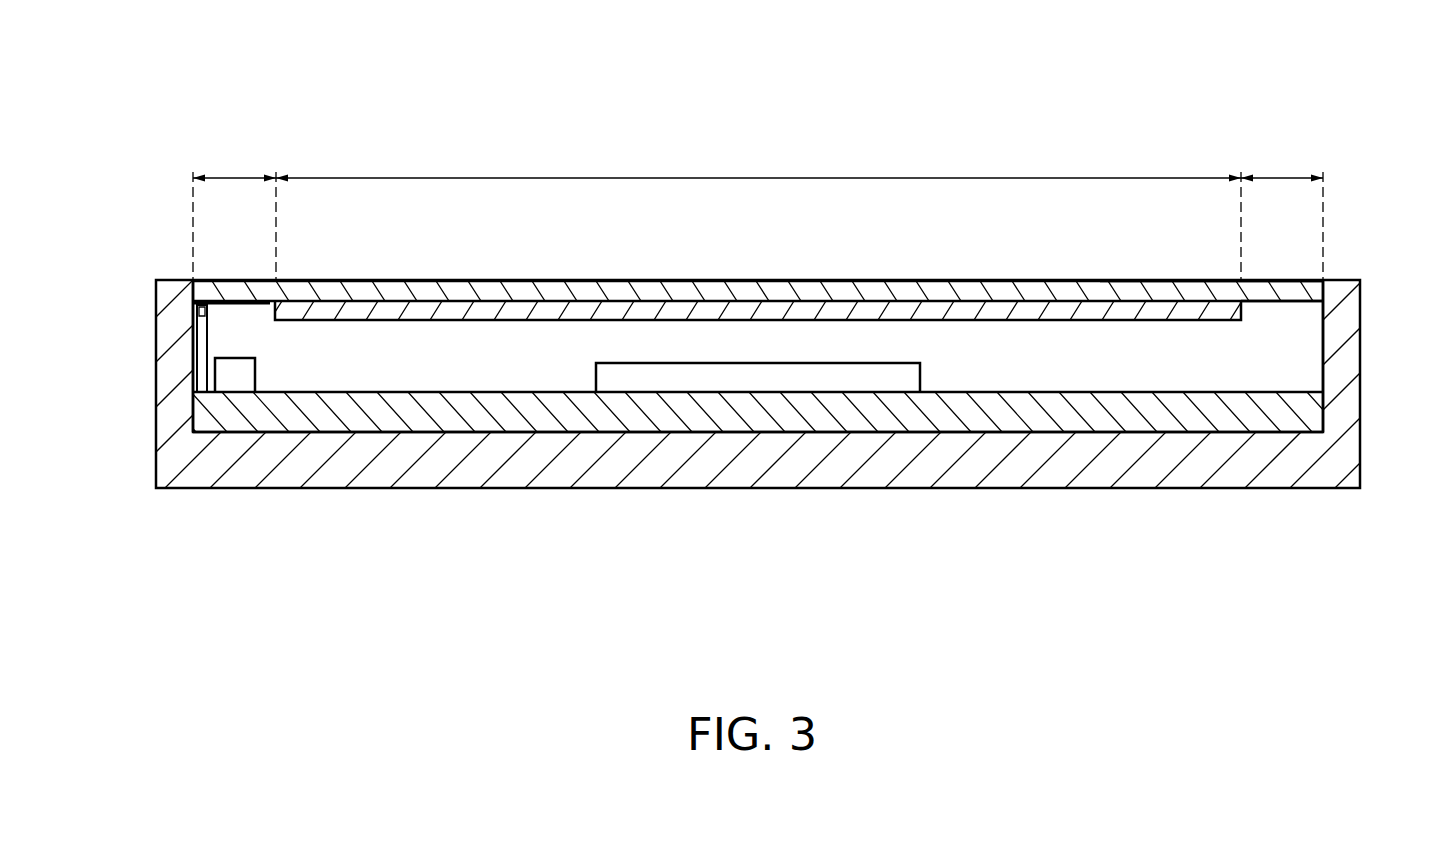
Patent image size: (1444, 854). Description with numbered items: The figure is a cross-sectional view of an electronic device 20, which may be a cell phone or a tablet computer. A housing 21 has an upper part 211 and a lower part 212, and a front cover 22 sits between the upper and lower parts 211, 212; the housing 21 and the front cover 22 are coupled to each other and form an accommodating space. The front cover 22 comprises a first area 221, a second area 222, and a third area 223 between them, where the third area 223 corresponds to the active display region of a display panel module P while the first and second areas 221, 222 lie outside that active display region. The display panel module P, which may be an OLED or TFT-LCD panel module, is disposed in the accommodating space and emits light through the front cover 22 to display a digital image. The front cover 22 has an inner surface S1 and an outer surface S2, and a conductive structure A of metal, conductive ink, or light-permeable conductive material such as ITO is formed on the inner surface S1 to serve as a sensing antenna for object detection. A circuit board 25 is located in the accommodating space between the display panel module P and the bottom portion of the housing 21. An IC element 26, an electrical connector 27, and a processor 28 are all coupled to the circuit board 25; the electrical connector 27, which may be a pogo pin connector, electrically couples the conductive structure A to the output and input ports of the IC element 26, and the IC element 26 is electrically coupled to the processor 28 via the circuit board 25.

The electronic device 20 is at (142, 108).
The housing 21 is at (150, 440).
The upper part 211 is at (173, 280).
The lower part 212 is at (1343, 280).
The front cover 22 is at (829, 292).
The first area 221 is at (234, 212).
The second area 222 is at (1282, 212).
The third area 223 is at (758, 163).
The circuit board 25 is at (611, 410).
The IC element 26 is at (237, 372).
The electrical connector 27 is at (198, 333).
The processor 28 is at (850, 378).
The display panel module P is at (975, 313).
The inner surface S1 is at (1290, 302).
The outer surface S2 is at (1147, 280).
The conductive structure A is at (262, 303).